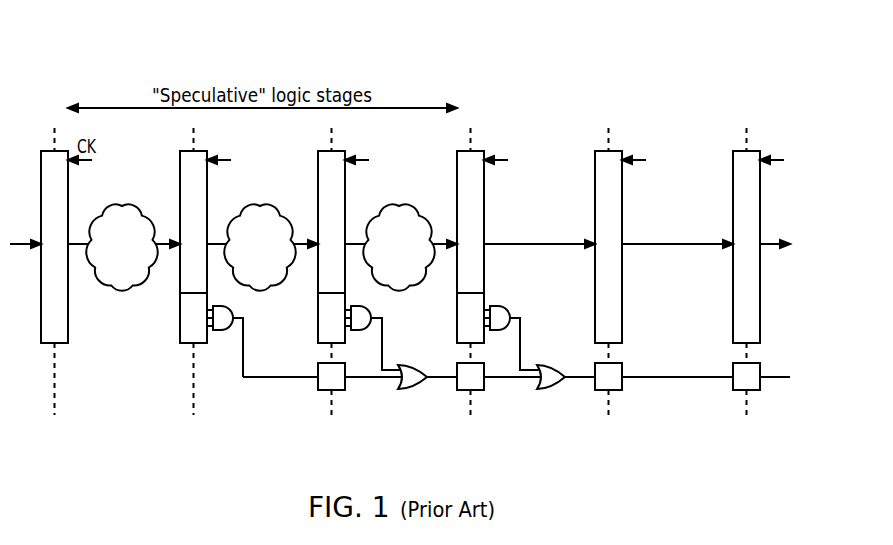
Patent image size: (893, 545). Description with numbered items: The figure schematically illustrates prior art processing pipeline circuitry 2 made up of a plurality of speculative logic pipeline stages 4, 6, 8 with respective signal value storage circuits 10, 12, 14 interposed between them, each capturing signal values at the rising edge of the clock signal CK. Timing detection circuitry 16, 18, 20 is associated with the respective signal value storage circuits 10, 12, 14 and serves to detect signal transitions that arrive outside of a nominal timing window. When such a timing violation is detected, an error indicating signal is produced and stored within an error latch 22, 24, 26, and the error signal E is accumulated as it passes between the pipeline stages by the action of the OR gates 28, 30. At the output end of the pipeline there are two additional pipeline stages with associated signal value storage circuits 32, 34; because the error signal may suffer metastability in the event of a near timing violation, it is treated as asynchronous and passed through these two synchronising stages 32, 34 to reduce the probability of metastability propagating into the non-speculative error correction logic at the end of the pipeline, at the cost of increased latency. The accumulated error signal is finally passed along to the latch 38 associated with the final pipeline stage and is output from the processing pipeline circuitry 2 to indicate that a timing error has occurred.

The processing pipeline circuitry 2 is at (238, 424).
The pipeline stage 4 is at (129, 203).
The pipeline stage 6 is at (267, 203).
The pipeline stage 8 is at (406, 203).
The signal value storage circuit 10 is at (207, 194).
The signal value storage circuit 12 is at (345, 194).
The signal value storage circuit 14 is at (484, 194).
The timing detection circuitry 16 is at (180, 322).
The timing detection circuitry 18 is at (318, 322).
The timing detection circuitry 20 is at (457, 322).
The error latch 22 is at (340, 391).
The error latch 24 is at (479, 391).
The error latch 26 is at (617, 391).
The OR gate 28 is at (412, 390).
The OR gate 30 is at (550, 390).
The signal value storage circuit 32 is at (595, 194).
The signal value storage circuit 34 is at (733, 194).
The latch 38 is at (755, 391).